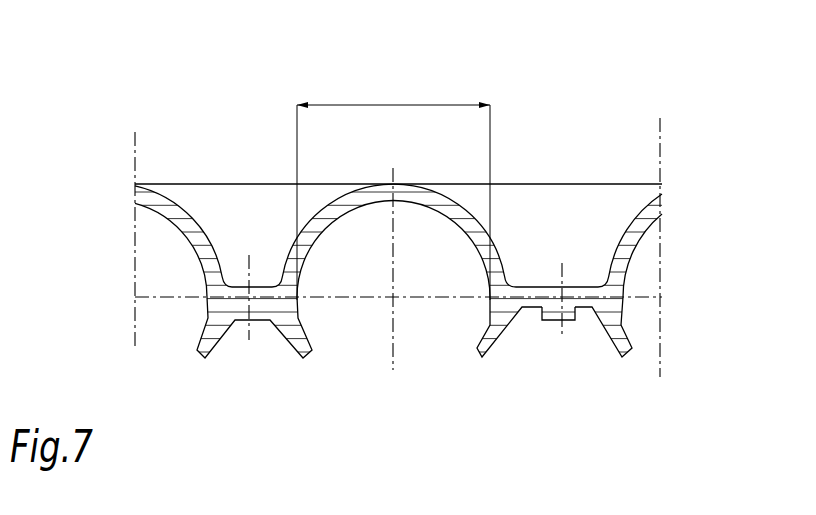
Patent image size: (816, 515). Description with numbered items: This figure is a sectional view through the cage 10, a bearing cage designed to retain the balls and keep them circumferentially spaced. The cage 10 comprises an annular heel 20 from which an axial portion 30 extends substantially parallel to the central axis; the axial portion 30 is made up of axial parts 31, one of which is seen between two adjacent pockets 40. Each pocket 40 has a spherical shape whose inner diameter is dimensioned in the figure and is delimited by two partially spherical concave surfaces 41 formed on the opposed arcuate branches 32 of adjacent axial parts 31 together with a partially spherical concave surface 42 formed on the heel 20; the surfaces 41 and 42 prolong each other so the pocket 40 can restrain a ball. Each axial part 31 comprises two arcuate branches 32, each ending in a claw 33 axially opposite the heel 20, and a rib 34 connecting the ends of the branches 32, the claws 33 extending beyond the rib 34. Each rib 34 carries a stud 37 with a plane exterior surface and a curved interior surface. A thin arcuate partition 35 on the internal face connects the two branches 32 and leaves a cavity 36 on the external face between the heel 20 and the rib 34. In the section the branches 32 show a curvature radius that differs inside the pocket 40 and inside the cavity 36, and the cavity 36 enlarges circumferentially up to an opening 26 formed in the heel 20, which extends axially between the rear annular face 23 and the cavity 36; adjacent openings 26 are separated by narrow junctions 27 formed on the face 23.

The cage 10 is at (113, 57).
The annular heel 20 is at (90, 186).
The rear annular face 23 is at (153, 174).
The openings 26 is at (232, 174).
The narrow junctions 27 is at (406, 173).
The axial portion 30 is at (99, 317).
The axial part 31 is at (568, 393).
The arcuate branches 32 is at (462, 228).
The claw 33 is at (480, 357).
The rib 34 is at (577, 325).
The arcuate partition 35 is at (597, 212).
The cavity 36 is at (236, 245).
The stud 37 is at (545, 322).
The pocket 40 is at (404, 346).
The partially spherical concave surface 41 is at (314, 326).
The partially spherical concave surface 42 is at (357, 223).